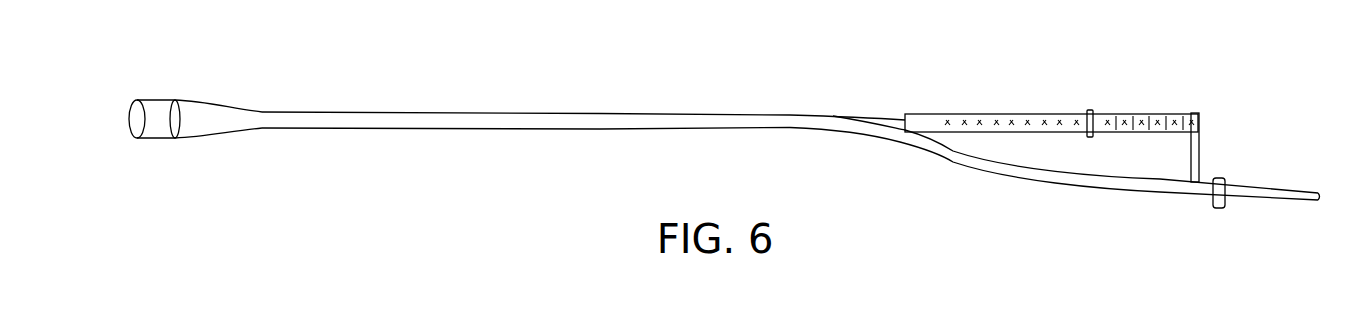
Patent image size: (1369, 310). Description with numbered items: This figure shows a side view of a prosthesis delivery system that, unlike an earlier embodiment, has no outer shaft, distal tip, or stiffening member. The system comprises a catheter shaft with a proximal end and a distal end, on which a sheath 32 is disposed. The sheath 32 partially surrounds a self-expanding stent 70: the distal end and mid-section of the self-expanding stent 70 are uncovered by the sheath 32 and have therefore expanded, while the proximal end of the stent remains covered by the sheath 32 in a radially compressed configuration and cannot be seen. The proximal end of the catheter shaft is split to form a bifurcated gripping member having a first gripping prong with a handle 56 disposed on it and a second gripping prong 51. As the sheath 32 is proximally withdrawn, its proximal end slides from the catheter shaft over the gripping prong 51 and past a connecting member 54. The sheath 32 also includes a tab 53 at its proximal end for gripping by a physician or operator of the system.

The self-expanding stent 70 is at (193, 113).
The sheath 32 is at (942, 153).
The second gripping prong 51 is at (1305, 193).
The handle 56 is at (1005, 113).
The connecting member 54 is at (1203, 152).
The tab 53 is at (1218, 208).